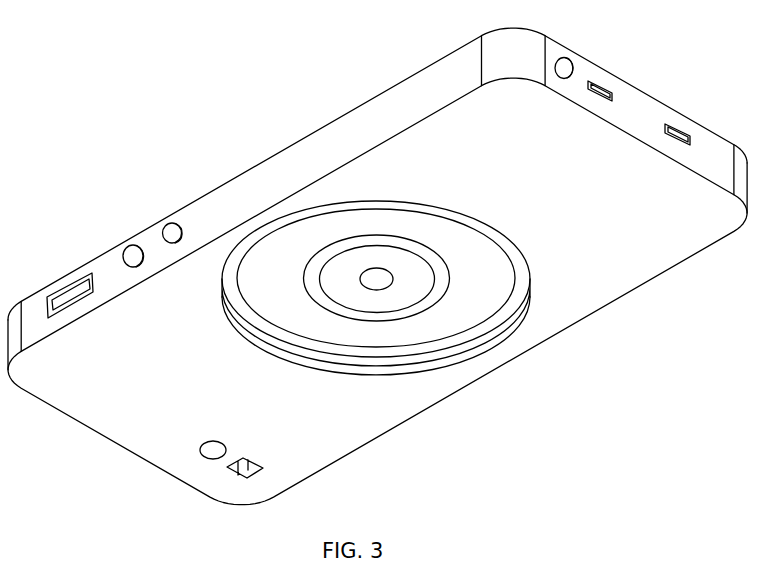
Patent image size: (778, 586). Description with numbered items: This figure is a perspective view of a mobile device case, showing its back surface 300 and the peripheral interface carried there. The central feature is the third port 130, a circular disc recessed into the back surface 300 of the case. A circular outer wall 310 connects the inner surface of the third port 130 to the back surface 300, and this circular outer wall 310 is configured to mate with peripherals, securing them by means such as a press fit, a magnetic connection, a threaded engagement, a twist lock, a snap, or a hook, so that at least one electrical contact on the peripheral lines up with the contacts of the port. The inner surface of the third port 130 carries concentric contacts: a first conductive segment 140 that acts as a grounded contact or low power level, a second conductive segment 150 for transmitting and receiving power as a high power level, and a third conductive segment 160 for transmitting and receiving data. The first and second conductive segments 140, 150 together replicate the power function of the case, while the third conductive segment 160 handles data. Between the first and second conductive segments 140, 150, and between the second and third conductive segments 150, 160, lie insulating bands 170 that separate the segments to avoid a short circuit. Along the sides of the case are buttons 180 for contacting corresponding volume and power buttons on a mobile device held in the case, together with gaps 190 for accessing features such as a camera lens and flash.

The third port 130 is at (483, 272).
The first conductive segment 140 is at (388, 283).
The second conductive segment 150 is at (423, 303).
The third conductive segment 160 is at (420, 335).
The insulating bands 170 is at (450, 352).
The buttons 180 is at (133, 238).
The gaps 190 is at (680, 127).
The back surface 300 is at (427, 382).
The circular outer wall 310 is at (388, 372).